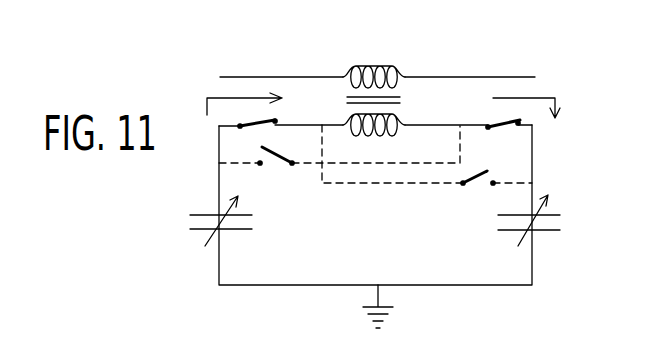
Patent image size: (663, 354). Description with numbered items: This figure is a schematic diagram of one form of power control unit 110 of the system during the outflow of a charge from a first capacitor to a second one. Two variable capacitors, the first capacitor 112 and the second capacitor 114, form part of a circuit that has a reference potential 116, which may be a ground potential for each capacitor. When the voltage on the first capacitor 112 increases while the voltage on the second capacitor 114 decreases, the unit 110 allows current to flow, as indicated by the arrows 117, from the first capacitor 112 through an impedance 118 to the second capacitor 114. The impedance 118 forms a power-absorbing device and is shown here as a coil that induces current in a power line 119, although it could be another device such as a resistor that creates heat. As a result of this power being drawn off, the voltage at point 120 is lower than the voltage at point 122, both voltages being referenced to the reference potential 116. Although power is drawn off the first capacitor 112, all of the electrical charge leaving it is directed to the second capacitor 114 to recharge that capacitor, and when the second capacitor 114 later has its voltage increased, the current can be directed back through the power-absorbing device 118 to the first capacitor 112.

The power control unit 110 is at (418, 81).
The first capacitor 112 is at (202, 232).
The second capacitor 114 is at (538, 233).
The reference potential 116 is at (383, 306).
The arrows 117 is at (218, 96).
The impedance 118 is at (396, 114).
The power line 119 is at (260, 76).
The point 120 is at (533, 128).
The point 122 is at (218, 128).